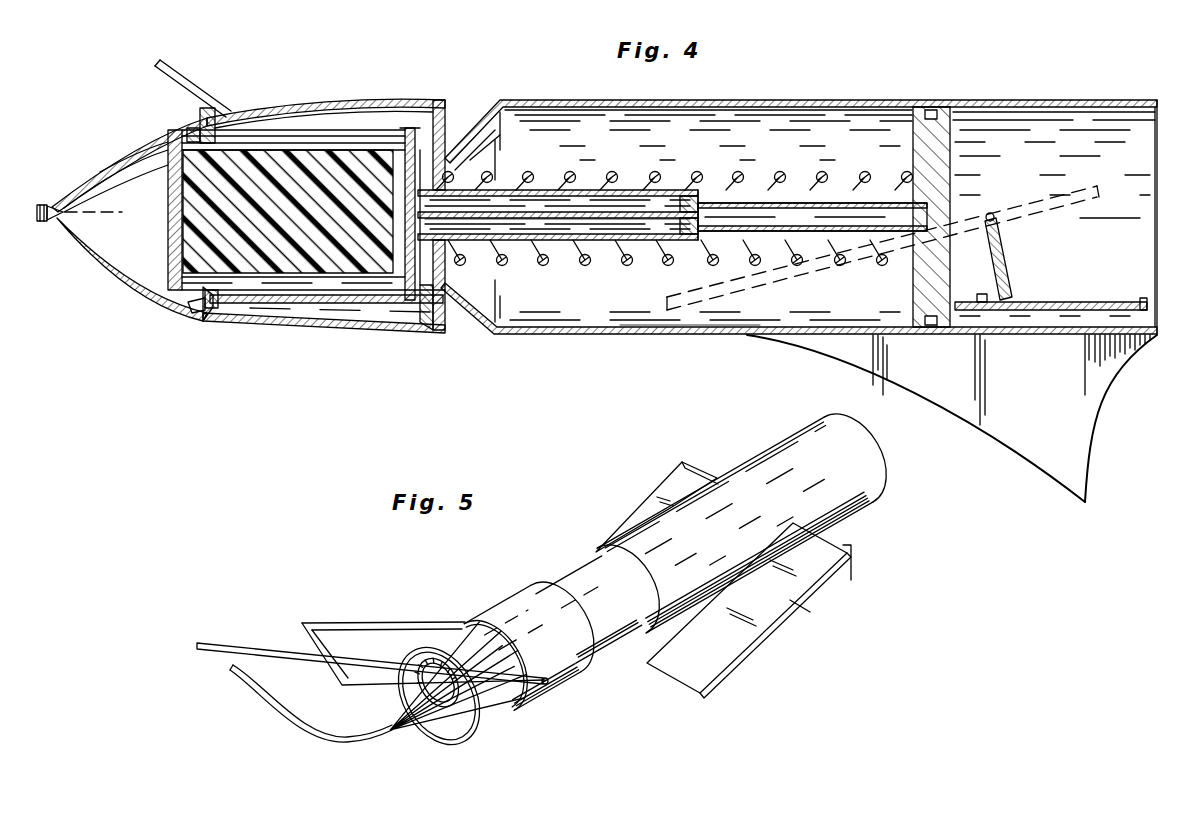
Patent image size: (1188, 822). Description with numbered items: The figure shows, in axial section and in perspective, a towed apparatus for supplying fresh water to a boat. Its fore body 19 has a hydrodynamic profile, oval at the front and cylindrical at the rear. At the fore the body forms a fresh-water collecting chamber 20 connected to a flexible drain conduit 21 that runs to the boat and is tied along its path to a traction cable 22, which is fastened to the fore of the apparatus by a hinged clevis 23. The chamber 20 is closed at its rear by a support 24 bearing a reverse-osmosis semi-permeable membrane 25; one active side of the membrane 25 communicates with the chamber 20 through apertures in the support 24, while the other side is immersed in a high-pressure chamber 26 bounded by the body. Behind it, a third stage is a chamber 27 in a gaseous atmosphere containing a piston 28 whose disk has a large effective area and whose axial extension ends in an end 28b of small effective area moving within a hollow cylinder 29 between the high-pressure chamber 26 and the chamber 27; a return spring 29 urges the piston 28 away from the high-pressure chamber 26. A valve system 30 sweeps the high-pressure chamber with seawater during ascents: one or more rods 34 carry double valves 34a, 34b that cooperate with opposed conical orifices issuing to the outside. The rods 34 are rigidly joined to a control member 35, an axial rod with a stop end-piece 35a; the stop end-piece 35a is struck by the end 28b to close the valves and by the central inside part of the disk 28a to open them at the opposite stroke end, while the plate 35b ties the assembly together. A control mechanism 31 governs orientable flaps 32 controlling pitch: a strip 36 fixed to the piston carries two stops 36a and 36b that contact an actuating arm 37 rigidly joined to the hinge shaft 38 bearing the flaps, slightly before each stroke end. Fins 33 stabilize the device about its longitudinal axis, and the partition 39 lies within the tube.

In FIG. 4, the fore body 19 is at (593, 313).
In FIG. 5, the fore body 19 is at (632, 584).
In FIG. 4, the fresh-water collecting chamber 20 is at (117, 243).
In FIG. 4, the flexible drain conduit 21 is at (45, 205).
In FIG. 5, the flexible drain conduit 21 is at (350, 745).
In FIG. 5, the traction cable 22 is at (222, 643).
In FIG. 4, the clevis 23 is at (197, 84).
In FIG. 5, the clevis 23 is at (383, 622).
In FIG. 4, the support 24 is at (109, 214).
In FIG. 4, the reverse-osmosis semi-permeable membrane 25 is at (337, 262).
In FIG. 4, the high-pressure chamber 26 is at (403, 313).
In FIG. 4, the chamber in gaseous atmosphere 27 is at (700, 318).
In FIG. 4, the piston 28 is at (843, 198).
In FIG. 4, the central inside part of the disk 28a is at (950, 167).
In FIG. 4, the end of the piston axial extension 28b is at (660, 185).
In FIG. 4, the hollow cylinder / return spring 29 is at (583, 258).
In FIG. 4, the valve system 30 is at (333, 107).
In FIG. 4, the control mechanism 31 is at (1054, 290).
In FIG. 4, the orientable flaps 32 is at (790, 272).
In FIG. 5, the orientable flaps 32 is at (780, 603).
In FIG. 4, the fins 33 is at (1003, 422).
In FIG. 4, the rod with double valves 34 is at (263, 308).
In FIG. 4, the valve 34a is at (452, 307).
In FIG. 4, the valve 34b is at (205, 125).
In FIG. 4, the control member 35 is at (542, 208).
In FIG. 4, the stop end-piece 35a is at (710, 202).
In FIG. 4, the plate 35b is at (407, 140).
In FIG. 4, the strip 36 is at (1073, 312).
In FIG. 4, the stop 36a is at (1143, 298).
In FIG. 4, the stop 36b is at (980, 296).
In FIG. 4, the actuating arm 37 is at (1010, 258).
In FIG. 4, the hinge shaft 38 is at (995, 215).
In FIG. 4, the tube partition 39 is at (518, 225).